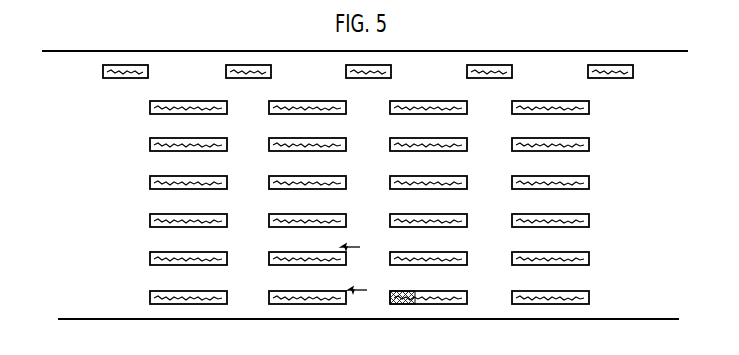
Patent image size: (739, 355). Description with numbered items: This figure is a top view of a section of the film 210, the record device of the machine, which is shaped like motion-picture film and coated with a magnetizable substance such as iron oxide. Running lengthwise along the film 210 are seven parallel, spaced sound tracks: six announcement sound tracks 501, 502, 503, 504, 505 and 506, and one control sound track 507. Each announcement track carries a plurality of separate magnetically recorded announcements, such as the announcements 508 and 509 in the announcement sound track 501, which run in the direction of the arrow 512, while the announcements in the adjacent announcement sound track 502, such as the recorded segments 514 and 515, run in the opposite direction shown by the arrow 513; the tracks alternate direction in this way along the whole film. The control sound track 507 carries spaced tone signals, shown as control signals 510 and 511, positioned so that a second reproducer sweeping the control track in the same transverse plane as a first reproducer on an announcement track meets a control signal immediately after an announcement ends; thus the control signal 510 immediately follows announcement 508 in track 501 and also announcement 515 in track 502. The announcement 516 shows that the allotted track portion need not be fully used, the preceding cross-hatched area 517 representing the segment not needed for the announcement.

The film 210 is at (484, 320).
The announcement sound track 501 is at (310, 297).
The announcement sound track 502 is at (311, 256).
The announcement sound track 503 is at (313, 221).
The announcement sound track 504 is at (313, 184).
The announcement sound track 505 is at (313, 146).
The announcement sound track 506 is at (312, 108).
The control sound track 507 is at (334, 66).
The announcement 508 is at (212, 303).
The announcement 509 is at (338, 303).
The control signal 510 is at (264, 65).
The control signal 511 is at (379, 65).
The arrow 512 is at (354, 283).
The arrow 513 is at (350, 240).
The cell 514 is at (212, 265).
The announcement 515 is at (322, 265).
The announcement 516 is at (463, 303).
The hatched cell portion 517 is at (405, 303).